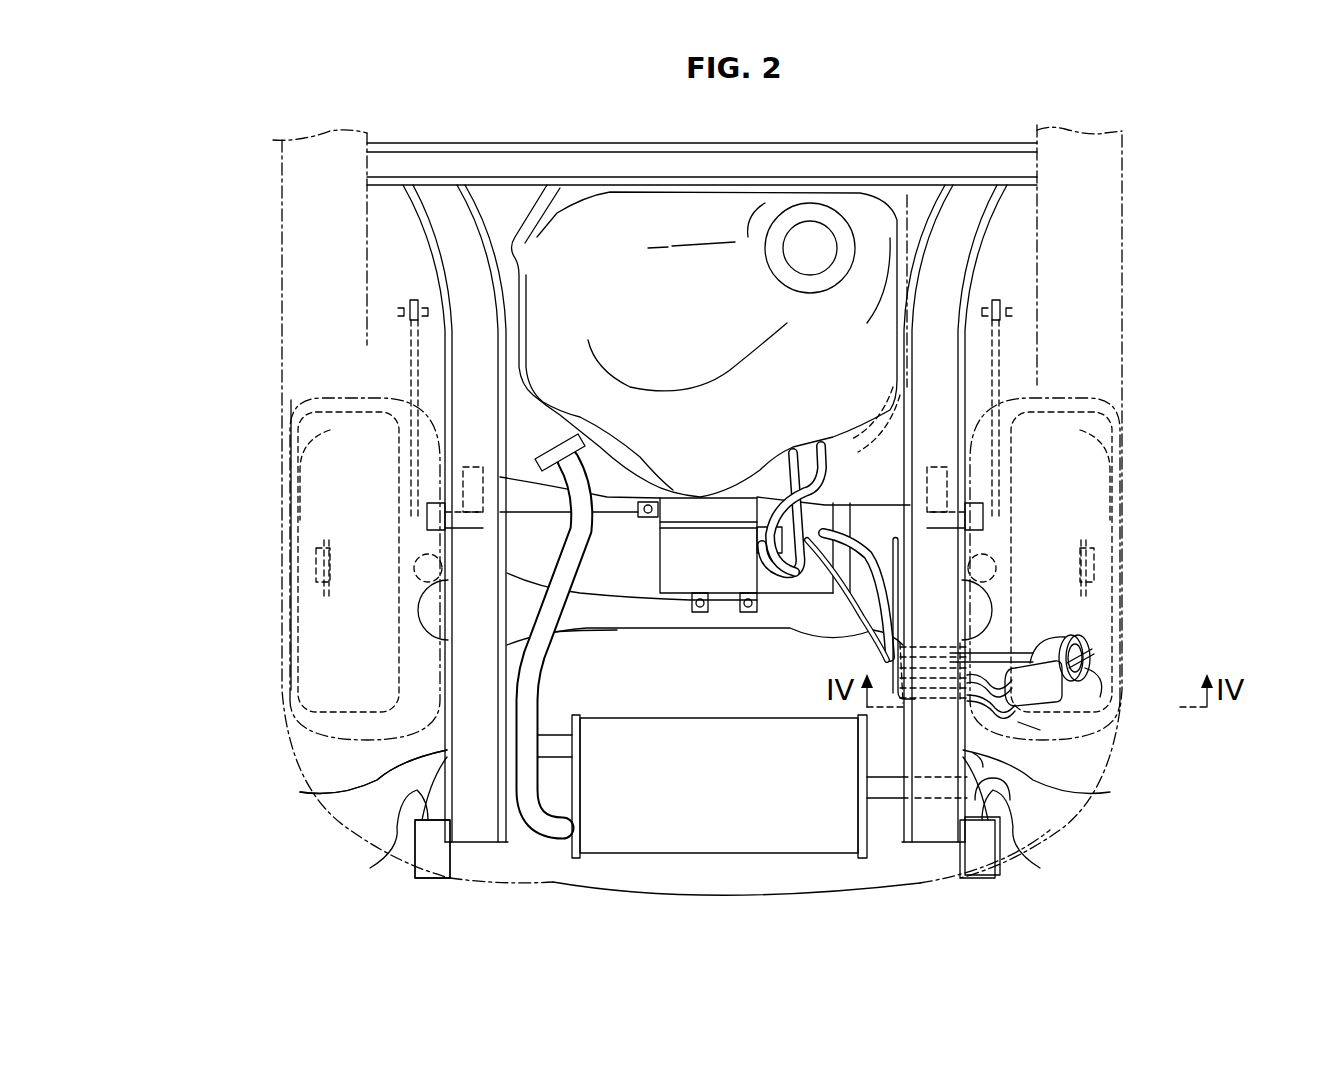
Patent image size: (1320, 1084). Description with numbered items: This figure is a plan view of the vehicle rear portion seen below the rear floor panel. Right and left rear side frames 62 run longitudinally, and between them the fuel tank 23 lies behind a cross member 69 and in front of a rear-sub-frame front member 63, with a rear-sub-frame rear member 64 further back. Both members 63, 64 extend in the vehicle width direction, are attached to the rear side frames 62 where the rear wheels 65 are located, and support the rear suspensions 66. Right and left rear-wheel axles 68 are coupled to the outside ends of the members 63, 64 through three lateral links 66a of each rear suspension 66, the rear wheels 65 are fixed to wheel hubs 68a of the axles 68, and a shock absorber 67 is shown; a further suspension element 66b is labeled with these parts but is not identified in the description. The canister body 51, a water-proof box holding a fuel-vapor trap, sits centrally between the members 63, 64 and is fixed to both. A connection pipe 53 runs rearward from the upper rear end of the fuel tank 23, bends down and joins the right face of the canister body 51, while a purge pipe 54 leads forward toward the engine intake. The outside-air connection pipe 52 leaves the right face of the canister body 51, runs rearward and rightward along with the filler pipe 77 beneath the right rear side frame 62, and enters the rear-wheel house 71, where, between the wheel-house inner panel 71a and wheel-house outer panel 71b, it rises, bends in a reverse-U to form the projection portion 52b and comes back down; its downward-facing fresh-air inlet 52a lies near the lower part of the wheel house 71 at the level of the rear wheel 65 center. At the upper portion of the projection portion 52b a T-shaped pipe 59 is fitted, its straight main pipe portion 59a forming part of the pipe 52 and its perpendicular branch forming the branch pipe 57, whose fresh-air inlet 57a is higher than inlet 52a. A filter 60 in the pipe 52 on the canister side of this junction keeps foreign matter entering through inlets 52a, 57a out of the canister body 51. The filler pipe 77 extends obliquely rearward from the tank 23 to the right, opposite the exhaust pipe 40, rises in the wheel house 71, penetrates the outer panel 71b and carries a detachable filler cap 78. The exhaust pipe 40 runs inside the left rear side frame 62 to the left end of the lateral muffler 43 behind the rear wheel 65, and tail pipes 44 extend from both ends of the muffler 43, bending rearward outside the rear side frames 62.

The fuel tank 23 is at (493, 186).
The cross member 69 is at (540, 143).
The rear-wheel house 71 is at (335, 380).
The wheel-house inner panel 71a is at (355, 405).
The wheel-house outer panel 71b is at (295, 383).
The rear wheel 65 is at (400, 412).
The rear suspension 66 is at (198, 438).
The lateral link 66a is at (440, 550).
The suspension link 66b is at (420, 455).
The wheel hub 68a is at (316, 572).
The rear-wheel axle 68 is at (364, 577).
The shock absorber 67 is at (507, 647).
The rear-sub-frame rear member 64 is at (663, 630).
The exhaust pipe 40 is at (542, 678).
The rear-sub-frame front member 63 is at (610, 497).
The canister body 51 is at (660, 542).
The fresh-air inlet 52a is at (893, 527).
The purge pipe 54 is at (865, 430).
The connection pipe 53 is at (777, 620).
The branch pipe 57 is at (1063, 727).
The outside-air connection pipe 52 is at (990, 745).
The projection portion 52b is at (1033, 760).
The filter 60 is at (1073, 717).
The filler cap 78 is at (1083, 687).
The filler pipe 77 is at (1090, 652).
The main pipe portion 59a is at (1057, 717).
The fresh-air inlet 57a is at (1020, 726).
The T-shaped pipe 59 is at (1185, 770).
The muffler 43 is at (697, 853).
The tail pipe 44 is at (1017, 880).
The rear side frame 62 is at (987, 750).